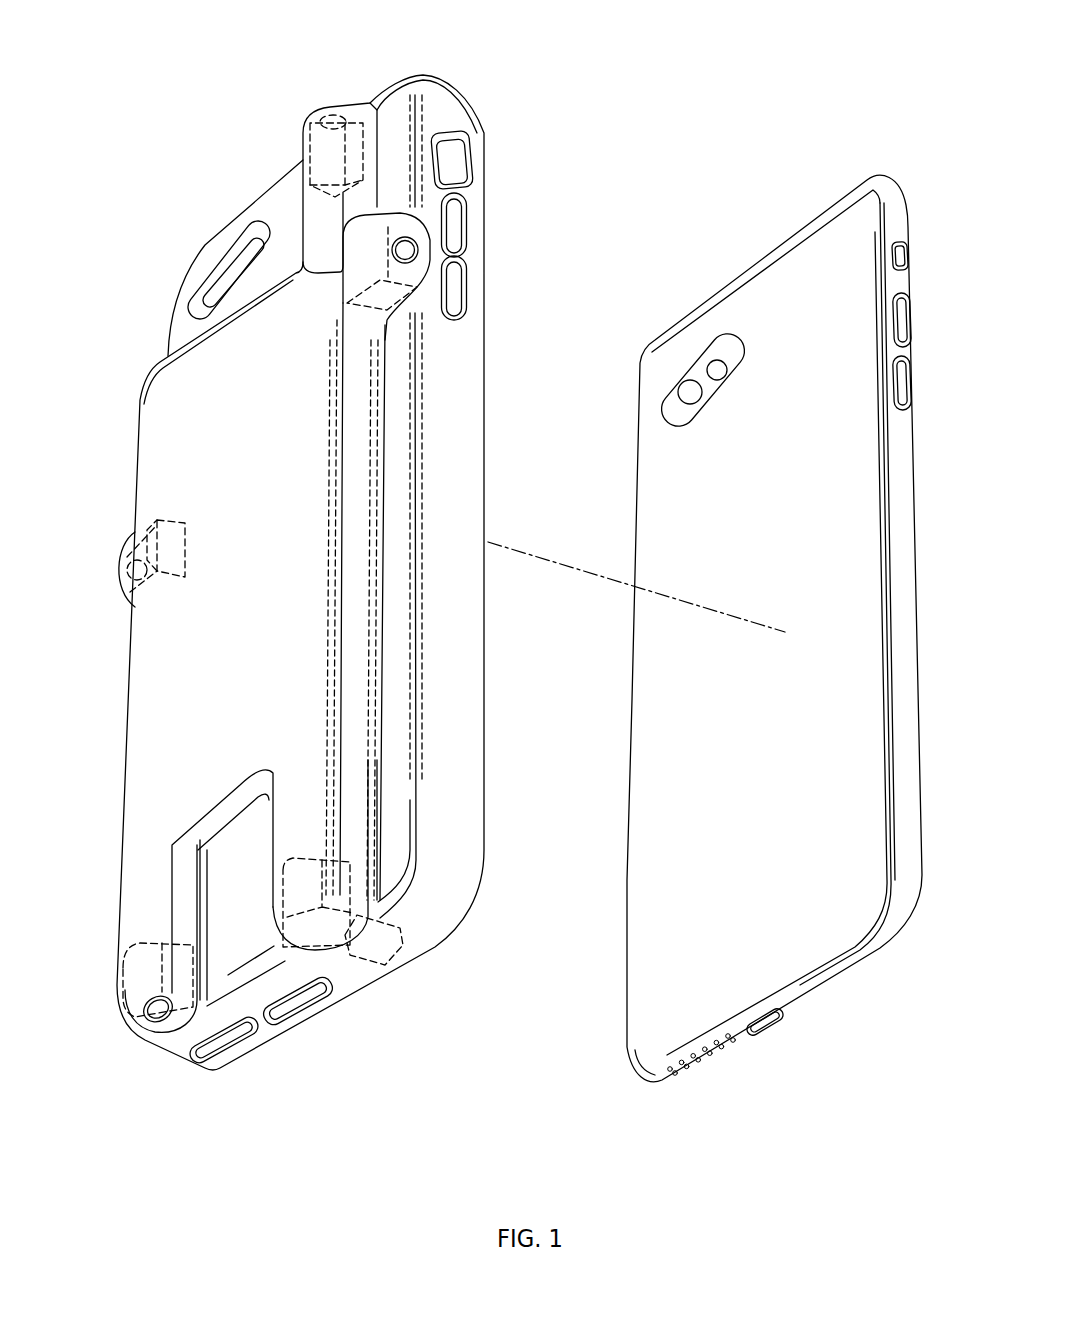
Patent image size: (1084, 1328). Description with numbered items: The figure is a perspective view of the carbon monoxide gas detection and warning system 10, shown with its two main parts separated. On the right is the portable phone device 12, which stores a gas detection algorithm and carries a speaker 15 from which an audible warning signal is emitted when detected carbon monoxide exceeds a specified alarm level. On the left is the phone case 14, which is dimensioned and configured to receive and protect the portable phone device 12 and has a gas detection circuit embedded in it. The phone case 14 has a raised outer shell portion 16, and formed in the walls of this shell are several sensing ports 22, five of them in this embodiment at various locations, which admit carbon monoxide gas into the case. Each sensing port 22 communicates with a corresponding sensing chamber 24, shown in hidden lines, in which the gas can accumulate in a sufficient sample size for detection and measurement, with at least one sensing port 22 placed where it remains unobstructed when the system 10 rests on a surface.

The carbon monoxide gas detection and warning system 10 is at (580, 63).
The portable phone device 12 is at (757, 260).
The phone case 14 is at (485, 383).
The speaker 15 is at (702, 1060).
The raised outer shell portion 16 is at (355, 683).
The sensing ports 22 is at (335, 113).
The sensing chamber 24 is at (303, 160).